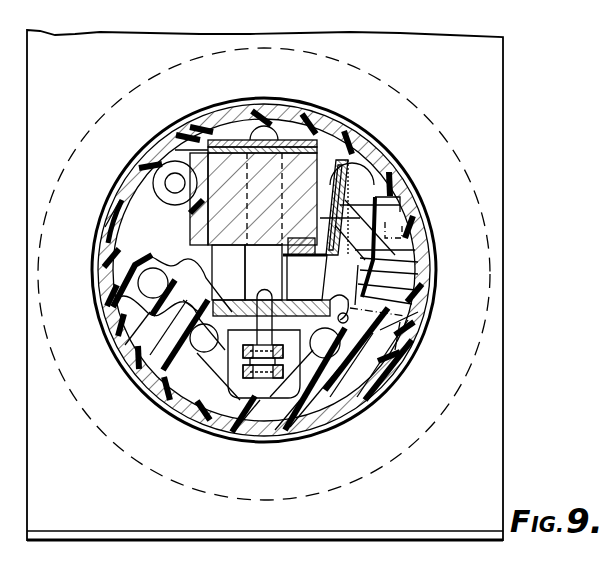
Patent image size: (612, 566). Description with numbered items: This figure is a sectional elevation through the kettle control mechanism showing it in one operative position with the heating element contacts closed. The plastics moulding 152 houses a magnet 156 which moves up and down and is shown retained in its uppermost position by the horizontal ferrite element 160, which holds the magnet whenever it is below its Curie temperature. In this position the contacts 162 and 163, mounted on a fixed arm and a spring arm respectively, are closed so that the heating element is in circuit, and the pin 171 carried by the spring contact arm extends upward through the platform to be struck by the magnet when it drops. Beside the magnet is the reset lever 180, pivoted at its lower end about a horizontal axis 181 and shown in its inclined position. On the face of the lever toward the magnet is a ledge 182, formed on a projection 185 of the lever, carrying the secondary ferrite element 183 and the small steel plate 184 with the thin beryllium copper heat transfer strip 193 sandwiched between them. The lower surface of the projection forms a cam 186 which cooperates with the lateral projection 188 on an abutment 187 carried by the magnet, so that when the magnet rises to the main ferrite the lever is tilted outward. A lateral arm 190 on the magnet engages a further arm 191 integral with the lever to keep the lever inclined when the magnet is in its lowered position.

The plastics moulding 152 is at (255, 430).
The magnet 156 is at (308, 170).
The ferrite element 160 is at (296, 150).
The contact 162 is at (283, 352).
The contact 163 is at (285, 368).
The pin 171 is at (257, 290).
The reset lever 180 is at (372, 290).
The horizontal axis 181 is at (400, 335).
The ledge 182 is at (365, 250).
The secondary ferrite element 183 is at (340, 178).
The small steel plate 184 is at (345, 195).
The projection 185 is at (380, 262).
The cam 186 is at (326, 300).
The abutment 187 is at (285, 250).
The lateral projection 188 is at (303, 256).
The lateral arm 190 is at (403, 233).
The further arm 191 is at (385, 318).
The heat transfer strip 193 is at (385, 206).